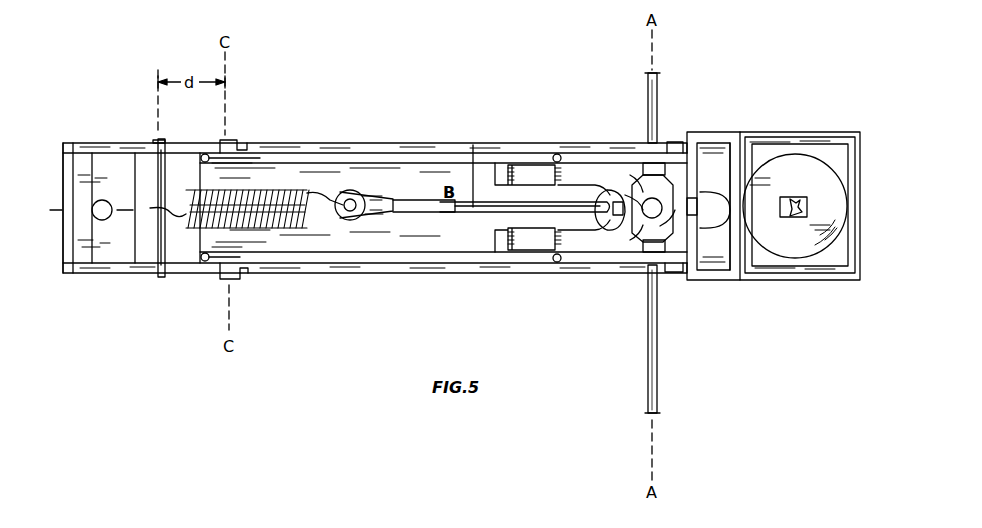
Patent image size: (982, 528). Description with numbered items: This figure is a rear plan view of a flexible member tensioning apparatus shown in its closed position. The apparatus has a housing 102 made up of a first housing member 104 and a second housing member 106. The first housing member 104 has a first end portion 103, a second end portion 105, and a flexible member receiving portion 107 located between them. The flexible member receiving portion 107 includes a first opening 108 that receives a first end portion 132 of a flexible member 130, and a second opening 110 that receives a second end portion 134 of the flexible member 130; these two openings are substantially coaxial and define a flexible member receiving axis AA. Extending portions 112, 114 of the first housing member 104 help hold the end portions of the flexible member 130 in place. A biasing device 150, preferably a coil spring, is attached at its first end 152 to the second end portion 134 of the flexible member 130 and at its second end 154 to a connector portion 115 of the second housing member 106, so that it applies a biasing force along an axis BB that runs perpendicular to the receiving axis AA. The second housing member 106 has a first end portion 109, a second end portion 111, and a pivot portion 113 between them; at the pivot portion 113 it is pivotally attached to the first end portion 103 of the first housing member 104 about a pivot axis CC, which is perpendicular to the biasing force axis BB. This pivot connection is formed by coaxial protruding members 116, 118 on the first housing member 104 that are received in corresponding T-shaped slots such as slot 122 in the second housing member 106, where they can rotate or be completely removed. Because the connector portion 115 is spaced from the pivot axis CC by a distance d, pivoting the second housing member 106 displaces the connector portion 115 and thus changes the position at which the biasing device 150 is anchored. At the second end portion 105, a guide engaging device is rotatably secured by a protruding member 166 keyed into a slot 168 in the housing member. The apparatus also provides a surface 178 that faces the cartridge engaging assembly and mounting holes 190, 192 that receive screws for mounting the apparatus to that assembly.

The housing 102 is at (456, 288).
The first end portion 103 is at (206, 247).
The first housing member 104 is at (772, 133).
The second end portion 105 is at (834, 150).
The second housing member 106 is at (109, 255).
The flexible member receiving portion 107 is at (573, 263).
The first opening 108 is at (664, 275).
The first end portion 109 is at (86, 255).
The second opening 110 is at (662, 143).
The second end portion 111 is at (630, 145).
The extending portion 112 is at (678, 235).
The pivot portion 113 is at (315, 272).
The extending portion 114 is at (640, 195).
The connector portion 115 is at (158, 252).
The protruding member 116 is at (223, 280).
The protruding member 118 is at (232, 139).
The T-shaped slot 122 is at (243, 148).
The flexible member 130 is at (658, 82).
The first end portion 132 is at (650, 252).
The second end portion 134 is at (474, 145).
The biasing device 150 is at (312, 190).
The first end 152 is at (350, 189).
The second end 154 is at (150, 160).
The protruding member 166 is at (786, 218).
The slot 168 is at (806, 200).
The surface 178 is at (412, 160).
The mounting hole 190 is at (700, 140).
The mounting hole 192 is at (100, 199).